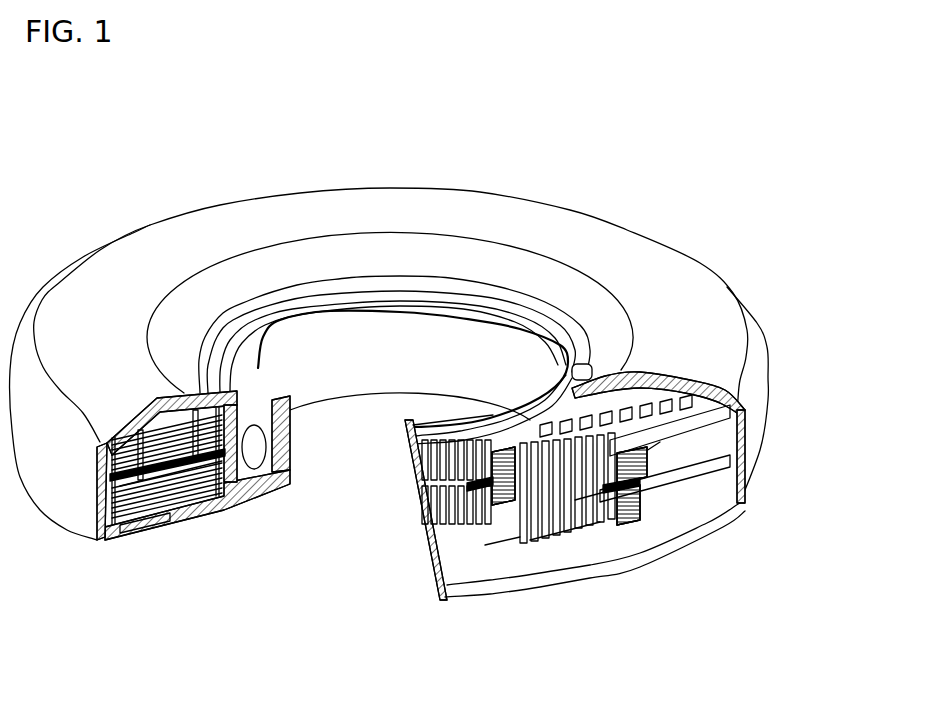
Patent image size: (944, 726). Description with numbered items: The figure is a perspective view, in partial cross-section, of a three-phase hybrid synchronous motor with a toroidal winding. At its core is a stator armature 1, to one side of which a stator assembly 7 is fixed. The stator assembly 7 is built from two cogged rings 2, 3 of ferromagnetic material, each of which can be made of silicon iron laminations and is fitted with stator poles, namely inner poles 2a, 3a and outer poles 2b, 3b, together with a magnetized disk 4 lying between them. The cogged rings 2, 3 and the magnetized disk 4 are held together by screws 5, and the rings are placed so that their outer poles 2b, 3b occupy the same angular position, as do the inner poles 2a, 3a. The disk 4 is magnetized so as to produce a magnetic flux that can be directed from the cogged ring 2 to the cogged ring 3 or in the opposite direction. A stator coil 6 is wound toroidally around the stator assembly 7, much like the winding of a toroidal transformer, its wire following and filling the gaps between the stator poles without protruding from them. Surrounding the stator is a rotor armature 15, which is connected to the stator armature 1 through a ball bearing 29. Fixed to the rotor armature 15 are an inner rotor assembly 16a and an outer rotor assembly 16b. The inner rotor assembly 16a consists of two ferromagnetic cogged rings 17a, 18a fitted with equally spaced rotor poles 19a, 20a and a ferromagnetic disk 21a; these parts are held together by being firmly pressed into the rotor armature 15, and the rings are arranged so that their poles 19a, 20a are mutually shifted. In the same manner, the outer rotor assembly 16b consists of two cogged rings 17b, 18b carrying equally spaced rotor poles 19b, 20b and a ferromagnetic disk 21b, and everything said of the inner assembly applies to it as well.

The stator armature 1 is at (283, 470).
The cogged ring 2 is at (172, 435).
The inner stator pole 2a is at (196, 440).
The outer stator pole 2b is at (155, 440).
The cogged ring 3 is at (186, 505).
The inner stator pole 3a is at (186, 480).
The outer stator pole 3b is at (547, 523).
The magnetized disk 4 is at (520, 540).
The screw 5 is at (673, 377).
The stator coil 6 is at (600, 510).
The stator assembly 7 is at (137, 530).
The rotor armature 15 is at (713, 325).
The inner rotor assembly 16a is at (294, 536).
The outer rotor assembly 16b is at (132, 518).
The cogged ring 17a is at (433, 450).
The cogged ring 17b is at (697, 462).
The cogged ring 18a is at (432, 492).
The cogged ring 18b is at (660, 513).
The rotor pole 19a is at (453, 450).
The rotor pole 19b is at (705, 412).
The rotor pole 20a is at (418, 545).
The rotor pole 20b is at (662, 520).
The ferromagnetic disk 21a is at (428, 520).
The ferromagnetic disk 21b is at (690, 490).
The ball bearing 29 is at (290, 416).